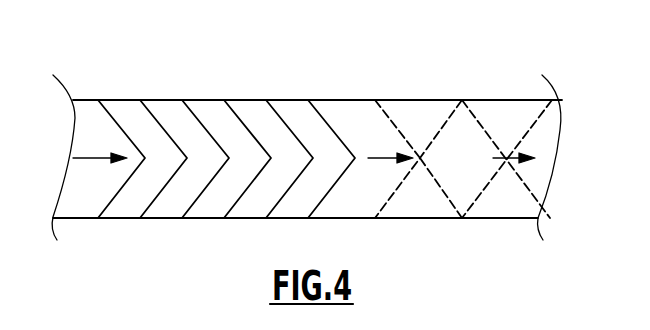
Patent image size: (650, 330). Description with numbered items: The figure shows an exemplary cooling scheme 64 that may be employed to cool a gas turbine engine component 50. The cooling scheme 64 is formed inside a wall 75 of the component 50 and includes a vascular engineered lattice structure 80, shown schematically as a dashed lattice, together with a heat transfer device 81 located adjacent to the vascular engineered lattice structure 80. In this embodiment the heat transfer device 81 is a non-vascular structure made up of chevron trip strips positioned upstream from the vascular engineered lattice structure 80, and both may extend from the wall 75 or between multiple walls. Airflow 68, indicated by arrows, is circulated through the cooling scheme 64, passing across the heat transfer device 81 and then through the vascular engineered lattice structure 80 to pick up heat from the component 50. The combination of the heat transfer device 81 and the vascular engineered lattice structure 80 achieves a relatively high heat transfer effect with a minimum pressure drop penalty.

The gas turbine engine component 50 is at (166, 76).
The cooling scheme 64 is at (295, 78).
The wall 75 is at (367, 120).
The vascular engineered lattice structure 80 is at (496, 123).
The heat transfer device 81 is at (177, 219).
The airflow 68 is at (88, 159).